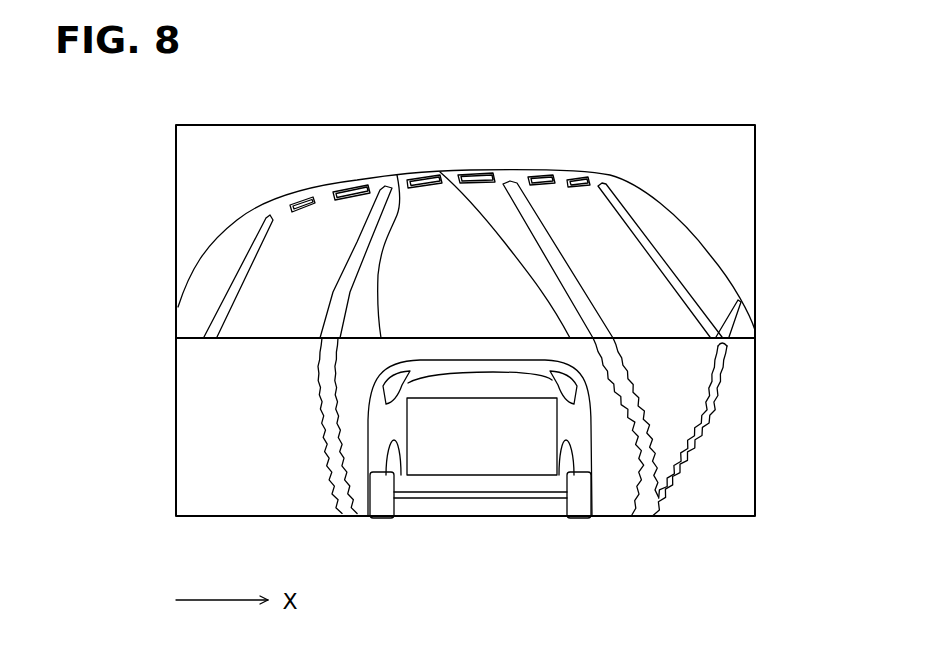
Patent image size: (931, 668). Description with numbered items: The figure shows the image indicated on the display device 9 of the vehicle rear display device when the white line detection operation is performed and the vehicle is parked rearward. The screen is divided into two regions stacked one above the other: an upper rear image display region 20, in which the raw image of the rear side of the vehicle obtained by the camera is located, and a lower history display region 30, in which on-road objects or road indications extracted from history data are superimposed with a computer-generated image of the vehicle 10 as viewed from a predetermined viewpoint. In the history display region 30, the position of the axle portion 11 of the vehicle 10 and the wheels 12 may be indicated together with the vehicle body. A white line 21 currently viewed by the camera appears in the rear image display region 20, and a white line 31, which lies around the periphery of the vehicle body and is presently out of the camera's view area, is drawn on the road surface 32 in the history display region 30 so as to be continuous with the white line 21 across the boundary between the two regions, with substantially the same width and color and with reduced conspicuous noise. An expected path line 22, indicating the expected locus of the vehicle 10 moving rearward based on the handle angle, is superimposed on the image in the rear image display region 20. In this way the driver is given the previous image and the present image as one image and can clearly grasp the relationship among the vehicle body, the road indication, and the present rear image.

The display device 9 is at (692, 120).
The rear image display region 20 is at (498, 198).
The white line 21 is at (358, 242).
The expected path line 22 is at (485, 214).
The history display region 30 is at (471, 459).
The white line 31 is at (323, 417).
The road surface 32 is at (255, 475).
The vehicle 10 is at (452, 500).
The axle portion 11 is at (520, 492).
The wheels 12 is at (382, 502).